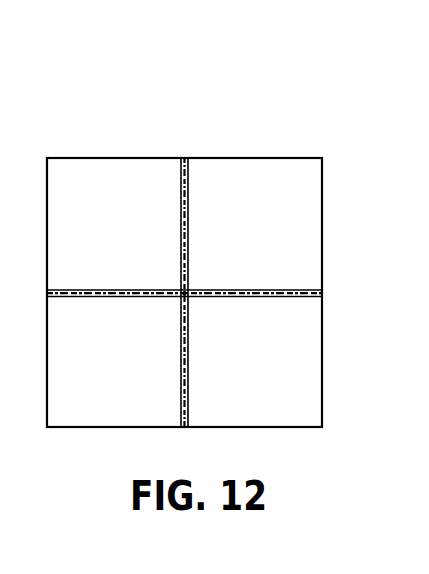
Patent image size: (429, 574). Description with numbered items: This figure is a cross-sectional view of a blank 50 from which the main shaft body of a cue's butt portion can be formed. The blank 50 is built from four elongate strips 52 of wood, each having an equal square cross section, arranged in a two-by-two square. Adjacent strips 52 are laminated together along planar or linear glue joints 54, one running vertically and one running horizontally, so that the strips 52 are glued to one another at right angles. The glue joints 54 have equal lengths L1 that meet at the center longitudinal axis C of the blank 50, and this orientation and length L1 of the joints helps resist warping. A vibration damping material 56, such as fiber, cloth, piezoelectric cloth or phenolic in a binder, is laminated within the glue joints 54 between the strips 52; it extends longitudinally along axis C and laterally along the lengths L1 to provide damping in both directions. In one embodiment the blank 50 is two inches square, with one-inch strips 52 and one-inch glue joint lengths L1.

The blank 50 is at (158, 124).
The strips of wood 52 is at (310, 203).
The glue joints 54 is at (190, 190).
The vibration damping material 56 is at (183, 212).
The length of glue joint L1 is at (189, 247).
The center longitudinal axis C is at (187, 294).